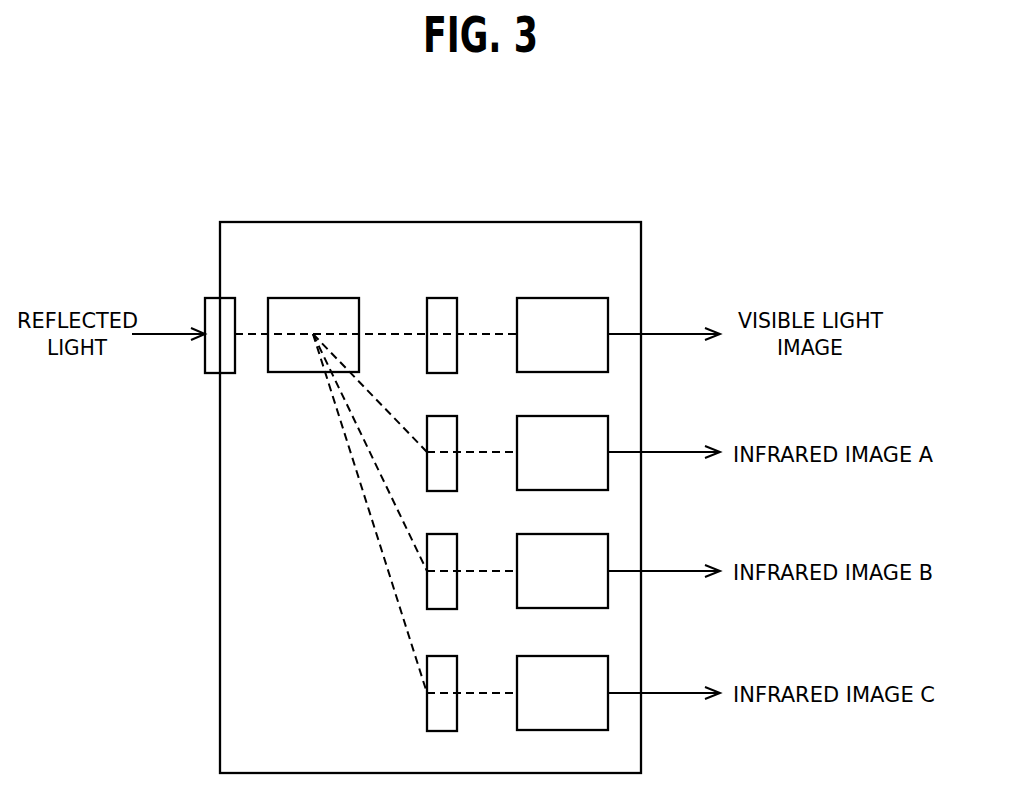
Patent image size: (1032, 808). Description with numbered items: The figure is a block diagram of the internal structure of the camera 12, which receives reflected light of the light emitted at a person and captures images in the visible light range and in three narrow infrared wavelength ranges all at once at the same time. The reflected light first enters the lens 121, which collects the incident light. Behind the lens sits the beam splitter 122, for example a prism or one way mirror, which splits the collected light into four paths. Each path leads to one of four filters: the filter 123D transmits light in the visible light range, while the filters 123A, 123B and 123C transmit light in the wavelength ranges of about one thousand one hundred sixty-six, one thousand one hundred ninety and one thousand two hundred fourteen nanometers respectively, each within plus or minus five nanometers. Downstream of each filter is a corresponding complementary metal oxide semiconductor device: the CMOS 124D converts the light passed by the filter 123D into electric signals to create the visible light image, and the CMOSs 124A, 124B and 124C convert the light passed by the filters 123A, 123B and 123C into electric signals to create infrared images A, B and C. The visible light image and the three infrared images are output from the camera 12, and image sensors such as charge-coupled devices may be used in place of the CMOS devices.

The camera 12 is at (563, 222).
The lens 121 is at (205, 305).
The beam splitter 122 is at (296, 373).
The filter 123D is at (440, 298).
The filter 123A is at (440, 416).
The filter 123B is at (440, 534).
The filter 123C is at (440, 656).
The complementary metal oxide semiconductor device 124D is at (563, 298).
The complementary metal oxide semiconductor device 124A is at (563, 416).
The complementary metal oxide semiconductor device 124B is at (563, 534).
The complementary metal oxide semiconductor device 124C is at (563, 656).